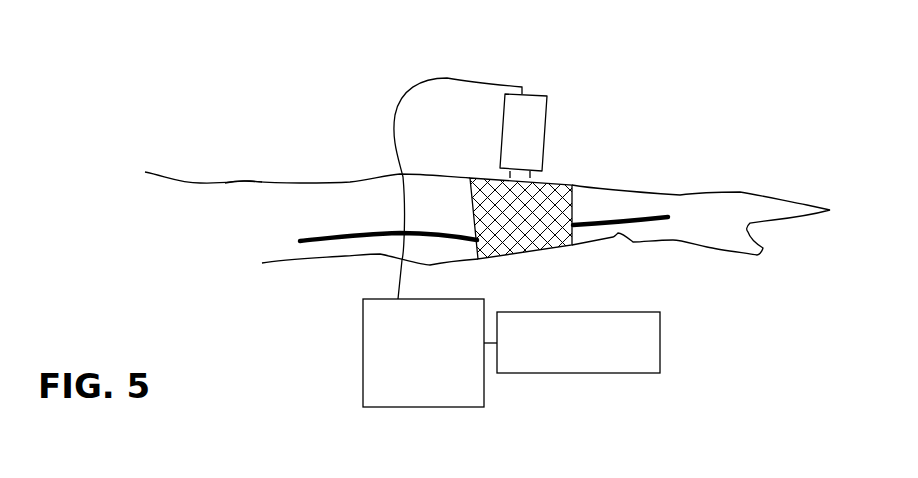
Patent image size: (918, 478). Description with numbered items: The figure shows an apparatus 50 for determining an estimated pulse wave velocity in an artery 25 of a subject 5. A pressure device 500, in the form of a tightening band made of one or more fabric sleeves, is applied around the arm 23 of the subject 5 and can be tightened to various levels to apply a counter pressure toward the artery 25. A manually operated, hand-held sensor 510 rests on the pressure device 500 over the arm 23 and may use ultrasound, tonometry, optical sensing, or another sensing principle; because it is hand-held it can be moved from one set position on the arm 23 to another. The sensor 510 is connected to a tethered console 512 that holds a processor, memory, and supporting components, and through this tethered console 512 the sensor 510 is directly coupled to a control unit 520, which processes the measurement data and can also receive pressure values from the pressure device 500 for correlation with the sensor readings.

The subject 5 is at (180, 193).
The arm 23 is at (252, 192).
The artery 25 is at (350, 243).
The apparatus 50 is at (283, 112).
The pressure device 500 is at (560, 182).
The sensor 510 is at (528, 130).
The tethered console 512 is at (403, 394).
The control unit 520 is at (558, 367).